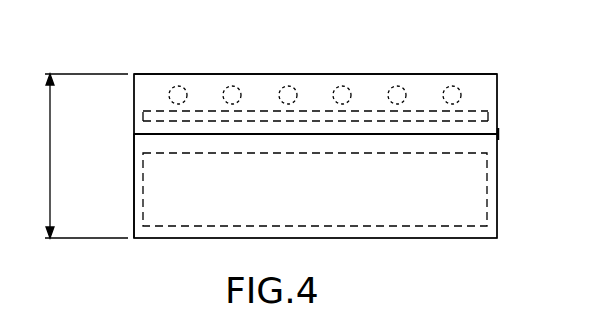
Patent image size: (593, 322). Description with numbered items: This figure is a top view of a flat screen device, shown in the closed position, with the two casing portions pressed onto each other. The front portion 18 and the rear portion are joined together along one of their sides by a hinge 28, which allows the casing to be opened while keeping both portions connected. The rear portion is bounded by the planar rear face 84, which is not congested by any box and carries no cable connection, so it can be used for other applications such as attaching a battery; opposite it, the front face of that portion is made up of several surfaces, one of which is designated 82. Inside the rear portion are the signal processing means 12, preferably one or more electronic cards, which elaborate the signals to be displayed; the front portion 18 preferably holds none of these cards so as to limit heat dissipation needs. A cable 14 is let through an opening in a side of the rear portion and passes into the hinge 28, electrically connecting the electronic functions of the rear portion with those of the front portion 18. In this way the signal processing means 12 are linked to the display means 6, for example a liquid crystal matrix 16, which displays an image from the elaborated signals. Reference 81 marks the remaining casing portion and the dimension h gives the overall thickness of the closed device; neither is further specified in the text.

The height of housing h is at (79, 156).
The display means 6 is at (435, 238).
The front face surface of rear portion 82 is at (497, 101).
The lower housing part 81 is at (497, 231).
The hinge 28 is at (498, 134).
The cable 14 is at (266, 81).
The rear face 84 is at (445, 74).
The signal processing means 12 is at (358, 115).
The liquid crystal matrix 16 is at (465, 213).
The front portion 18 is at (137, 194).